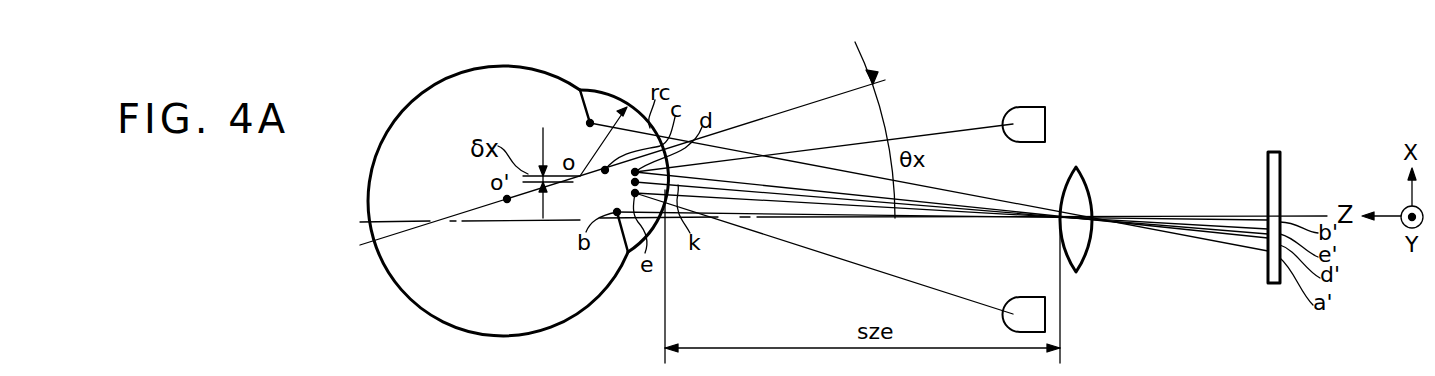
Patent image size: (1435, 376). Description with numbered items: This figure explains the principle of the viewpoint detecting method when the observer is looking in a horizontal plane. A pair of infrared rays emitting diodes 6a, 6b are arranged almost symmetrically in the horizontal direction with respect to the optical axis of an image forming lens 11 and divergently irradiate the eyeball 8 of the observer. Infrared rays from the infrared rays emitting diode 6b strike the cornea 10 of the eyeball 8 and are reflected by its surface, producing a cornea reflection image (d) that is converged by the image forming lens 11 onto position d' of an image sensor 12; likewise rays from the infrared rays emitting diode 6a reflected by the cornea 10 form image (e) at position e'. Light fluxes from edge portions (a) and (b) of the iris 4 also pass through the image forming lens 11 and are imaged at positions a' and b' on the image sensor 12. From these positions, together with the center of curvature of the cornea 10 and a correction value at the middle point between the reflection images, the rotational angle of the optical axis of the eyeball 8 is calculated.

The iris 4 is at (580, 90).
The eyeball 8 is at (433, 313).
The cornea 10 is at (613, 97).
The infrared rays emitting diode 6a is at (1045, 318).
The infrared rays emitting diode 6b is at (1030, 107).
The image forming lens 11 is at (1083, 176).
The image sensor 12 is at (1280, 160).